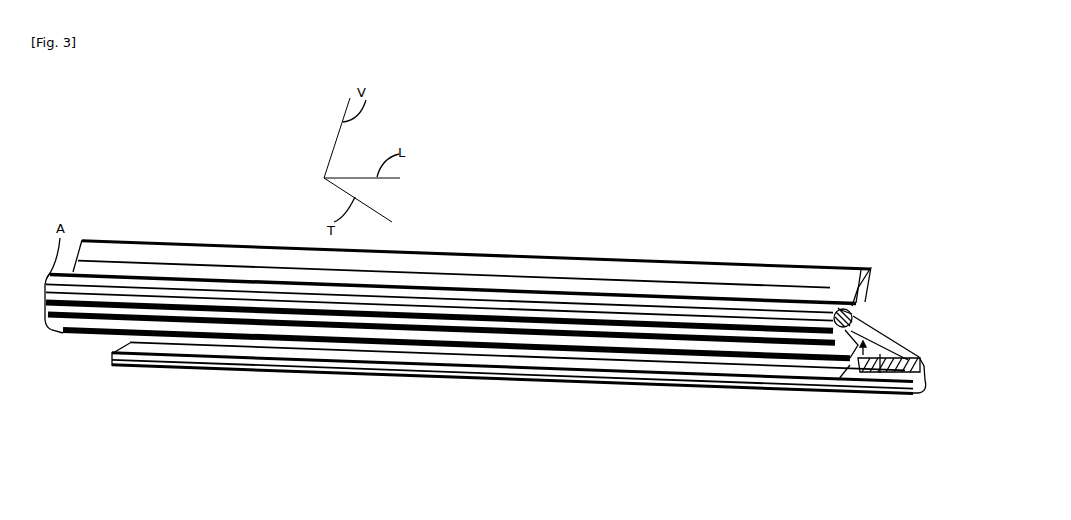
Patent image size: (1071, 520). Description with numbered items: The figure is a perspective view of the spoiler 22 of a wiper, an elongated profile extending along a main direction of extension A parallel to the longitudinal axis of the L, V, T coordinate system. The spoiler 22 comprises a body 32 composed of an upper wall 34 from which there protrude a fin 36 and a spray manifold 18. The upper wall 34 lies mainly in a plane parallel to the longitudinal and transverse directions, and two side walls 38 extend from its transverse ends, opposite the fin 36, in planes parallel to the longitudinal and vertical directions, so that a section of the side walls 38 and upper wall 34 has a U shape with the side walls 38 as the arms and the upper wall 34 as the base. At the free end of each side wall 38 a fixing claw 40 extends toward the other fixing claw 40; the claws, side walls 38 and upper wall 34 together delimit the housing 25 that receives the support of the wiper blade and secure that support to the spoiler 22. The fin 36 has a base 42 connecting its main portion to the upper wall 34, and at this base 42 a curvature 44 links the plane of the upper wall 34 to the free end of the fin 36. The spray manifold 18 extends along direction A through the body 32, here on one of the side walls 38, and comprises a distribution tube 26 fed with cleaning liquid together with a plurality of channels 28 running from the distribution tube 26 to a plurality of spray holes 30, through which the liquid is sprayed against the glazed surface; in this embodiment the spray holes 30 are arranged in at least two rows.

The spoiler 22 is at (458, 285).
The spray manifold 18 is at (830, 297).
The base 42 is at (838, 300).
The fin 36 is at (858, 287).
The distribution tube 26 is at (857, 314).
The curvature 44 is at (880, 325).
The upper wall 34 is at (898, 342).
The side walls 38 is at (926, 386).
The fixing claw 40 is at (893, 378).
The body 32 is at (850, 360).
The housing 25 is at (878, 357).
The channels 28 is at (512, 397).
The spray holes 30 is at (730, 350).